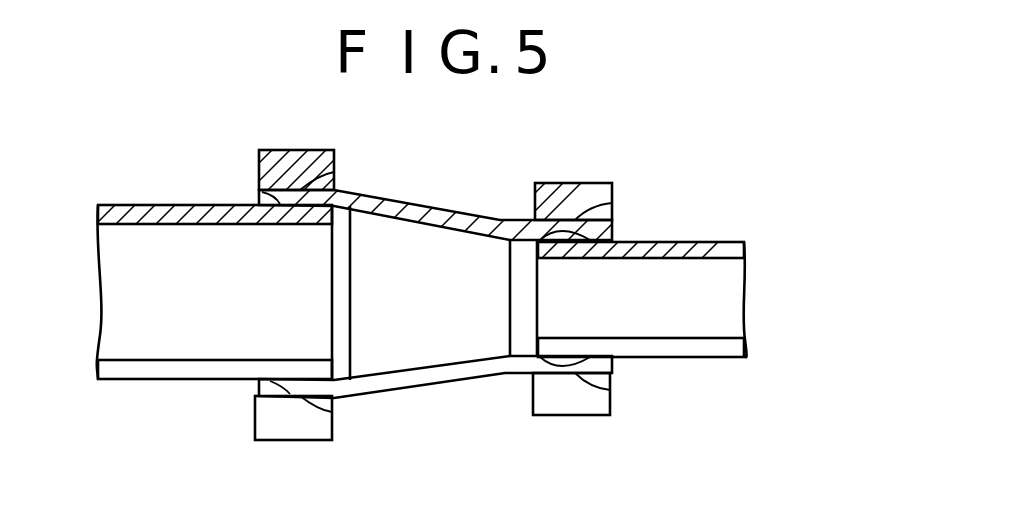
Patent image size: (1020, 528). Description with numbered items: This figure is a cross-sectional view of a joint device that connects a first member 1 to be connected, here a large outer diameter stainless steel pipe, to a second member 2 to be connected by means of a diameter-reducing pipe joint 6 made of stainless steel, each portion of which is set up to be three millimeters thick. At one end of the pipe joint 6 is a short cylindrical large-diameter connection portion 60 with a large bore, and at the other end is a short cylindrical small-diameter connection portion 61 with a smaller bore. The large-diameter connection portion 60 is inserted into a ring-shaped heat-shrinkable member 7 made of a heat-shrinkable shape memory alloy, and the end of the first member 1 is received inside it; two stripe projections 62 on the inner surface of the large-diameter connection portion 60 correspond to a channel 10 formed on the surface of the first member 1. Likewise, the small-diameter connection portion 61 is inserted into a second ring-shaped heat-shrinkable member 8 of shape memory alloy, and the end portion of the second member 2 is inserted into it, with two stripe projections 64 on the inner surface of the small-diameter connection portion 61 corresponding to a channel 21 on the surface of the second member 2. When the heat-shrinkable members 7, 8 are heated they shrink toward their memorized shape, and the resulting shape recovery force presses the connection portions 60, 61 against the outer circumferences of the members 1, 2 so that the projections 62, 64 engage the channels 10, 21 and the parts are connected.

The first member to be connected 1 is at (140, 383).
The second member to be connected 2 is at (718, 242).
The diameter-reducing pipe joint 6 is at (440, 207).
The heat-shrinkable member 7 is at (272, 150).
The heat-shrinkable member 8 is at (563, 183).
The channel 10 is at (262, 195).
The channel 21 is at (512, 243).
The large-diameter connection portion 60 is at (334, 163).
The small-diameter connection portion 61 is at (607, 218).
The stripe projections 62 is at (318, 225).
The stripe projections 64 is at (598, 250).